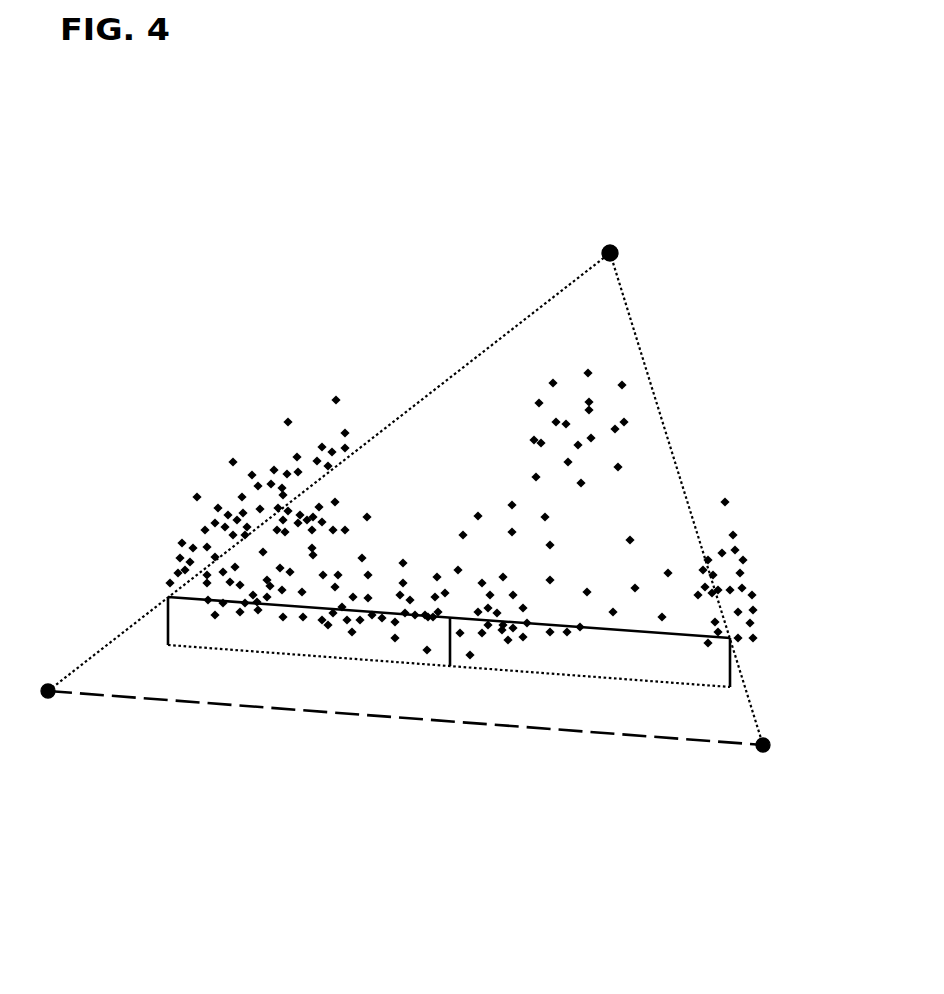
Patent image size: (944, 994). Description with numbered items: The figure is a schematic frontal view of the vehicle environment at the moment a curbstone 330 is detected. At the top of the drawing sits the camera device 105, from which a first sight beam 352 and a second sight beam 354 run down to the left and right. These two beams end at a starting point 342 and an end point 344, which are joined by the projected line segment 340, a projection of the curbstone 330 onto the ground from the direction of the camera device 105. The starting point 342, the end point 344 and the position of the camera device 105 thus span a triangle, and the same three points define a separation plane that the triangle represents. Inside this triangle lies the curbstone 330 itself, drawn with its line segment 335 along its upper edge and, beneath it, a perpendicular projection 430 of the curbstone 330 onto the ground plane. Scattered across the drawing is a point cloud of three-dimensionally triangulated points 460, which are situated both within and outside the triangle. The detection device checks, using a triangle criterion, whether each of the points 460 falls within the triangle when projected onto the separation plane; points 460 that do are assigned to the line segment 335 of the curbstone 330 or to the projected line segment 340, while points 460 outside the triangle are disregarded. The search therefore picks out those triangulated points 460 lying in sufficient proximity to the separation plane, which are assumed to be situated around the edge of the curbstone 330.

The camera device 105 is at (617, 247).
The curbstone 330 is at (160, 592).
The line segment 335 is at (630, 634).
The projected line segment 340 is at (393, 718).
The starting point 342 is at (45, 699).
The end point 344 is at (763, 752).
The first sight beam 352 is at (470, 358).
The second sight beam 354 is at (643, 352).
The perpendicular projection 430 is at (315, 655).
The three-dimensionally triangulated points 460 is at (250, 428).